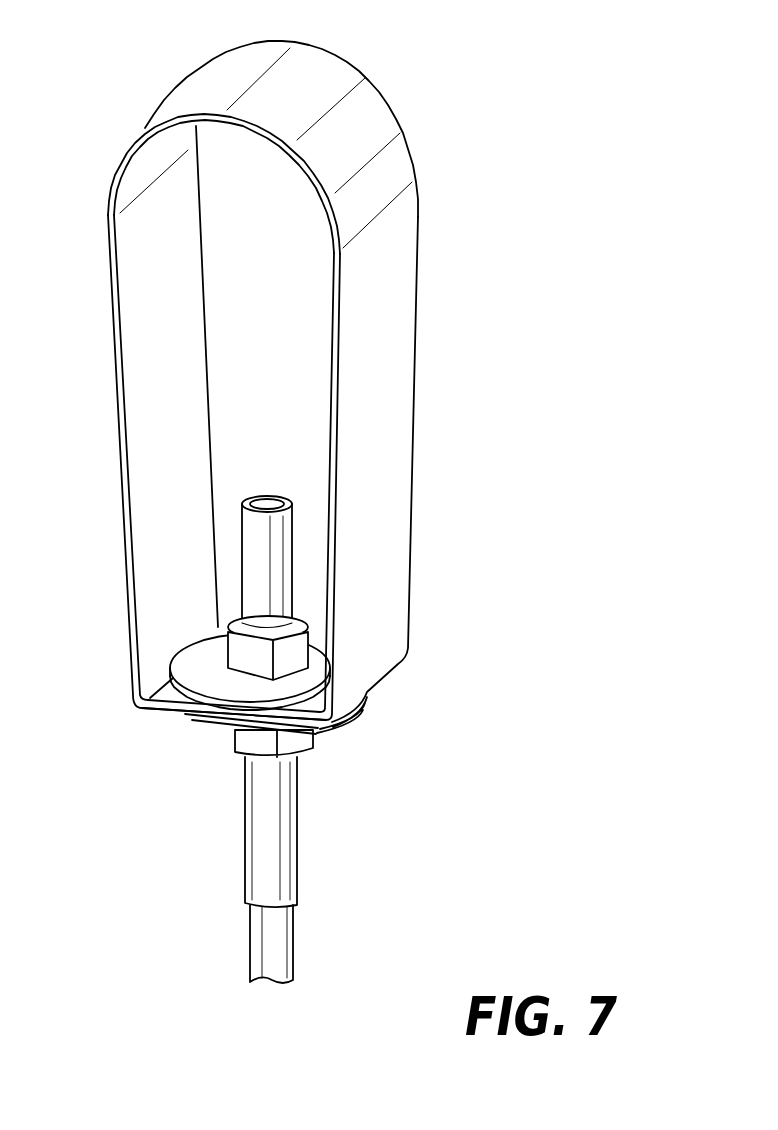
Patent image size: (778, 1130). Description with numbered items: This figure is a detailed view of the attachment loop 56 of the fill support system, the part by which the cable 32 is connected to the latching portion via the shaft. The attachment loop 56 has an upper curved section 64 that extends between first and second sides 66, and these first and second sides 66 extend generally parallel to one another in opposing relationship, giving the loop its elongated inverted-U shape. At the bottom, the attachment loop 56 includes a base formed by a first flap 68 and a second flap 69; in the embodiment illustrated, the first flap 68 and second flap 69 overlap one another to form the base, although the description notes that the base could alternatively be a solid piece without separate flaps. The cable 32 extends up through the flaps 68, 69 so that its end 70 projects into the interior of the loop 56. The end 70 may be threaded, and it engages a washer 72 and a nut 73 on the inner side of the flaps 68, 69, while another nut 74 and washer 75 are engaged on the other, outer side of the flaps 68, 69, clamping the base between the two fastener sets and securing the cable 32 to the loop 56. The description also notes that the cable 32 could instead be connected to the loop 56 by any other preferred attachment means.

The cable 32 is at (295, 930).
The attachment loop 56 is at (341, 491).
The upper curved section 64 is at (290, 46).
The first and second sides 66 is at (261, 366).
The first flap 68 is at (170, 690).
The second flap 69 is at (136, 706).
The end 70 is at (273, 500).
The washer 72 is at (205, 680).
The nut 73 is at (265, 668).
The nut 74 is at (247, 748).
The washer 75 is at (222, 716).